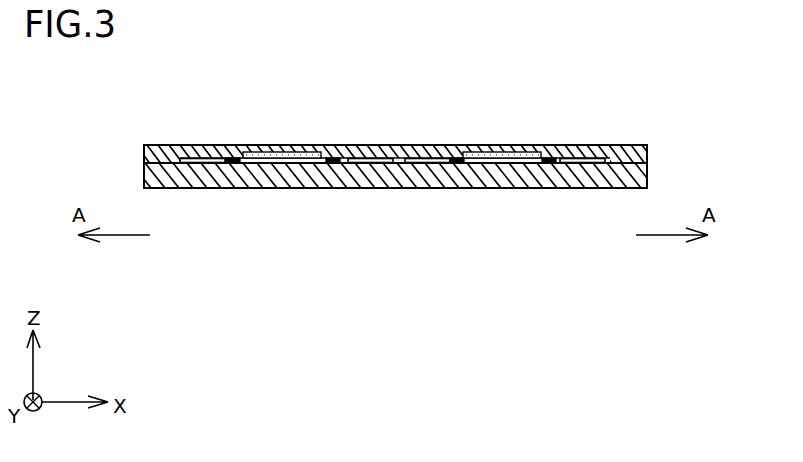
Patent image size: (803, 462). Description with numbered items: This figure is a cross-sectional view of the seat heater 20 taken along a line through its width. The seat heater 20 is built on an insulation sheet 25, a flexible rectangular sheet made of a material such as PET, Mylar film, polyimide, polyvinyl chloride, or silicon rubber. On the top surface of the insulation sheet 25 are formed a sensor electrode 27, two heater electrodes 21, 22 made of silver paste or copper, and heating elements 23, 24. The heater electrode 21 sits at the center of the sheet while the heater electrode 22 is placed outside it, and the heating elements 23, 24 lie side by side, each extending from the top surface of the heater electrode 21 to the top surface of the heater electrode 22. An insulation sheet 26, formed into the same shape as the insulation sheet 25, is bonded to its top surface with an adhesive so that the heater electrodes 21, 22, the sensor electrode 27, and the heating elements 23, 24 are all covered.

The seat heater 20 is at (574, 88).
The heater electrode 21 is at (452, 167).
The heater electrode 22 is at (555, 167).
The heating element 23 is at (298, 151).
The heating element 24 is at (499, 151).
The insulation sheet 25 is at (650, 178).
The insulation sheet 26 is at (650, 151).
The sensor electrode 27 is at (602, 160).